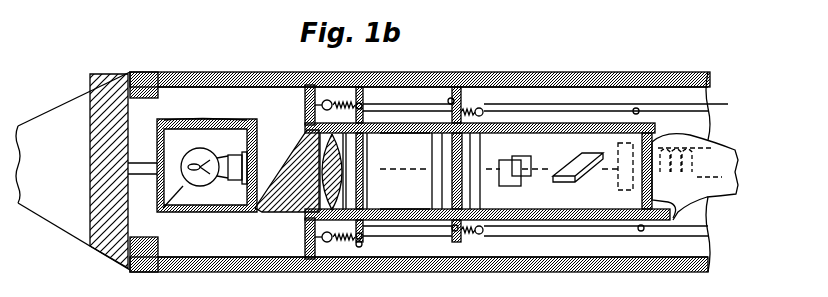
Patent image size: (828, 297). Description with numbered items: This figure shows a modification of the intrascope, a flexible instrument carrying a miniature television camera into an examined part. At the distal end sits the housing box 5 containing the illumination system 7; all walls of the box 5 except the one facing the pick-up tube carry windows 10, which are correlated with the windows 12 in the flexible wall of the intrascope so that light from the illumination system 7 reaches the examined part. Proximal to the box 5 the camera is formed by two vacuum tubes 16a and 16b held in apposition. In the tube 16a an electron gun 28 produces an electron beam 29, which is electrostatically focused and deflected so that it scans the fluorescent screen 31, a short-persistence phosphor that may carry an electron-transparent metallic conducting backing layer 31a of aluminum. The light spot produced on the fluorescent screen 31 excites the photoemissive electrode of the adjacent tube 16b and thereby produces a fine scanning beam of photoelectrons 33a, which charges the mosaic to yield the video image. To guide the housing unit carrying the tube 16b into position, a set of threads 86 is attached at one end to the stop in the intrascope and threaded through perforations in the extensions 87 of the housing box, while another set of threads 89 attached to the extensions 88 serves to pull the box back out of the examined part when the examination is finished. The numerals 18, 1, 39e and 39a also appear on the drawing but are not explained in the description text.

The windows 12 is at (211, 72).
The casing lining 18 is at (278, 72).
The windows 10 is at (198, 120).
The housing box 5 is at (247, 119).
The illumination system 7 is at (166, 210).
The extensions 87 is at (356, 74).
The vacuum tube 16b is at (389, 133).
The extensions 88 is at (456, 96).
The vacuum tube 16a is at (555, 147).
The fluorescent screen 31 is at (487, 155).
The metallic conducting backing layer 31a is at (530, 113).
The electron gun 28 is at (620, 145).
The threads 86 is at (722, 104).
The threads 89 is at (709, 122).
The scanning beam of photoelectrons 33a is at (388, 140).
The optical axis 1 is at (499, 165).
The condenser lens 39e is at (368, 172).
The terminal 39a is at (360, 234).
The electron beam 29 is at (580, 183).